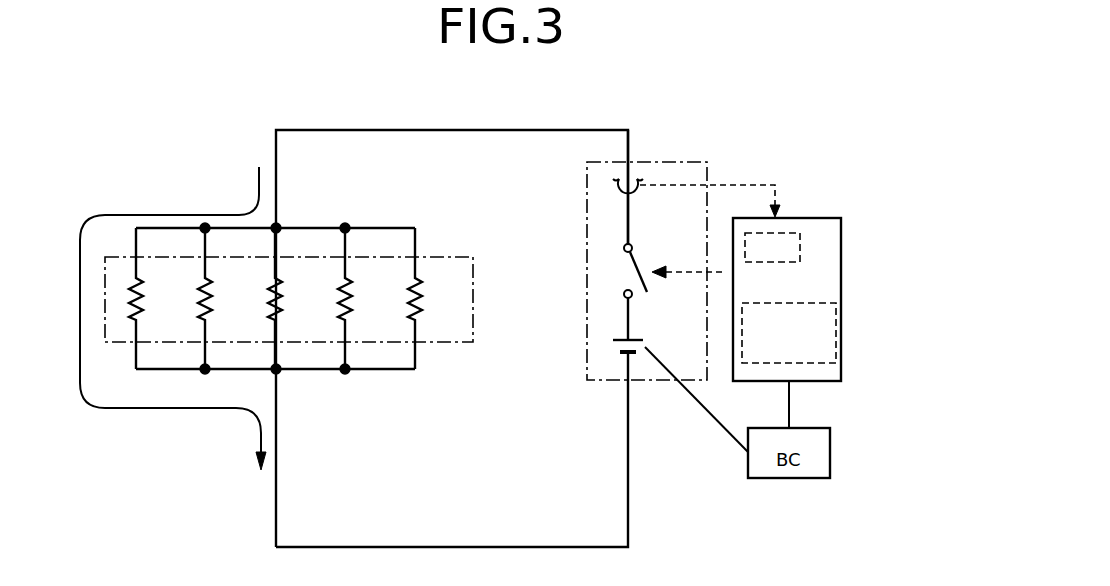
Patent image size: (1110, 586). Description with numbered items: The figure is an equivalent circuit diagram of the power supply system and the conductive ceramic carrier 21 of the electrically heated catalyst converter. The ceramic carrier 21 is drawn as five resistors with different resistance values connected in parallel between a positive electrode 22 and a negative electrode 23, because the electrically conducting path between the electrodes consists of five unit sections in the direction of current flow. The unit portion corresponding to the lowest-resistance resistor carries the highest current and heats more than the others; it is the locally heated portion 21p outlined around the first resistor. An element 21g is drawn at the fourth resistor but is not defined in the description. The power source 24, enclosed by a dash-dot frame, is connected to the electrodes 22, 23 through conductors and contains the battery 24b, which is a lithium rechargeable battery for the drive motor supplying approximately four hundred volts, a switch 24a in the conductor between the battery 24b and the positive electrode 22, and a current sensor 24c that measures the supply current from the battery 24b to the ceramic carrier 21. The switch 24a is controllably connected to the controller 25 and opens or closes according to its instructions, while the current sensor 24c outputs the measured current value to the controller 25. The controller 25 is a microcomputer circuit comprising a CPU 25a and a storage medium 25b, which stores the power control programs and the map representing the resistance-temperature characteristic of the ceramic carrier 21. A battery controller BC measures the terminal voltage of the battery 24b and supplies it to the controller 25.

The ceramic carrier 21 is at (291, 275).
The heater element 21g is at (394, 293).
The locally heated portion 21p is at (113, 333).
The positive electrode 22 is at (279, 226).
The negative electrode 23 is at (278, 372).
The power source 24 is at (690, 160).
The switch 24a is at (630, 268).
The battery 24b is at (627, 352).
The current sensor 24c is at (617, 186).
The controller 25 is at (800, 217).
The CPU 25a is at (800, 247).
The storage medium 25b is at (788, 302).